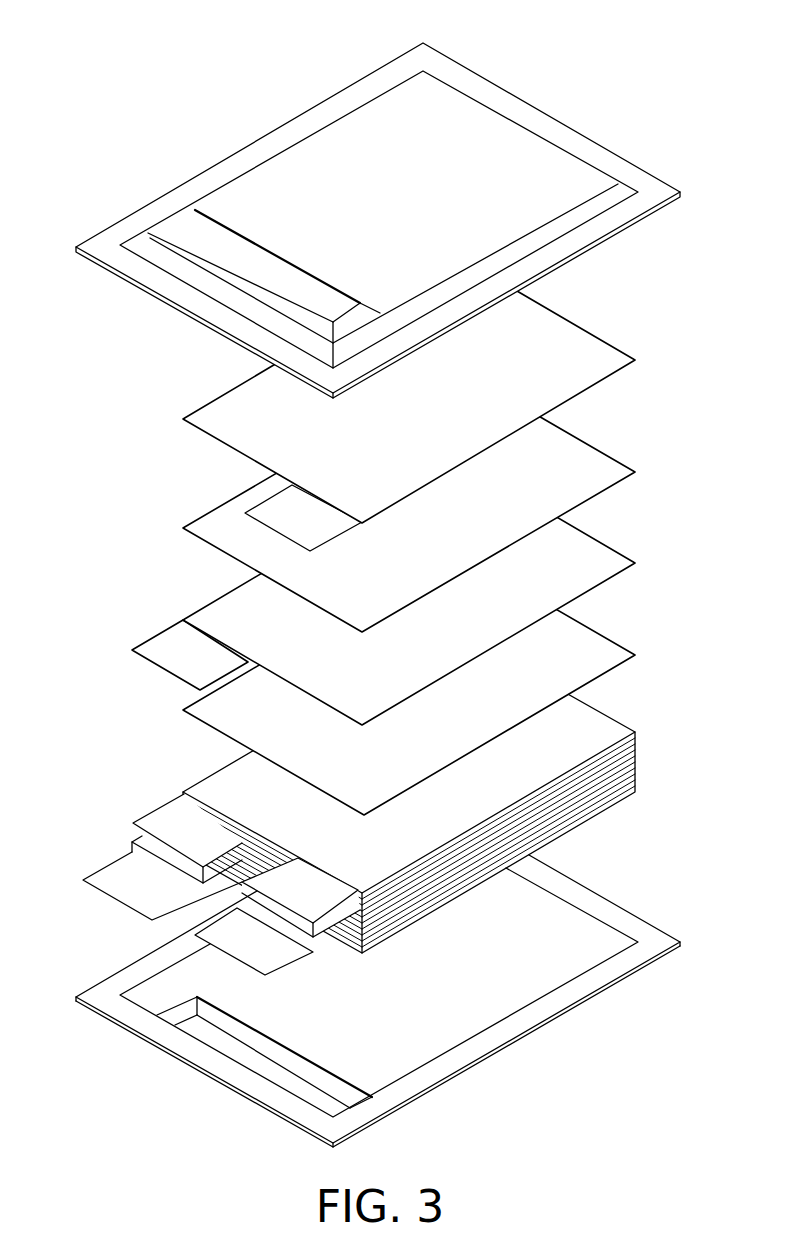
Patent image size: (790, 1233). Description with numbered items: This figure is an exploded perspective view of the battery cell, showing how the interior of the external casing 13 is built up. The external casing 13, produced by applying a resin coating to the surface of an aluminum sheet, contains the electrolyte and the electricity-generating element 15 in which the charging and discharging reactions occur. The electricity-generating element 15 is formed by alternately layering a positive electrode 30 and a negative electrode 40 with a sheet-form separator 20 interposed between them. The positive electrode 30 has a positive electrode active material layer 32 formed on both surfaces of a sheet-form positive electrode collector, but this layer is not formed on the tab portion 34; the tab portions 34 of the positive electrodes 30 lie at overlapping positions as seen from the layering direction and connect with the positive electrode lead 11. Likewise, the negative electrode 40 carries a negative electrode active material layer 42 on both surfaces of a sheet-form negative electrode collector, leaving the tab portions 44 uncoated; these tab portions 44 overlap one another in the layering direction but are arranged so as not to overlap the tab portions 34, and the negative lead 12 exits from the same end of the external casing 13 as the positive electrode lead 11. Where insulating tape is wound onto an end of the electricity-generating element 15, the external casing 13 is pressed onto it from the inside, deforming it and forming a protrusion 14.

The positive electrode lead 11 is at (212, 940).
The negative lead 12 is at (108, 878).
The external casing 13 is at (417, 62).
The protrusion 14 is at (190, 223).
The electricity-generating element 15 is at (148, 778).
The separator 20 is at (409, 500).
The positive electrode 30 is at (430, 389).
The positive electrode active material layer 32 is at (583, 345).
The tab portion 34 is at (308, 508).
The negative electrode 40 is at (403, 591).
The negative electrode active material layer 42 is at (602, 550).
The tab portion 44 is at (157, 645).